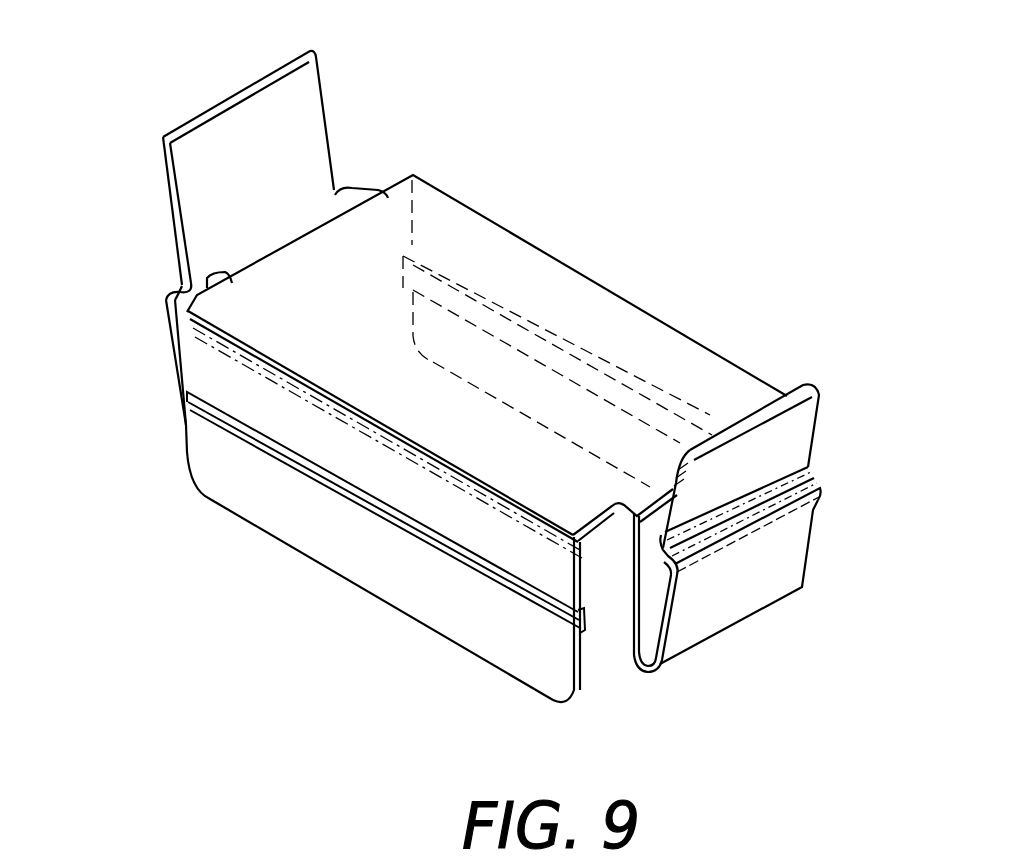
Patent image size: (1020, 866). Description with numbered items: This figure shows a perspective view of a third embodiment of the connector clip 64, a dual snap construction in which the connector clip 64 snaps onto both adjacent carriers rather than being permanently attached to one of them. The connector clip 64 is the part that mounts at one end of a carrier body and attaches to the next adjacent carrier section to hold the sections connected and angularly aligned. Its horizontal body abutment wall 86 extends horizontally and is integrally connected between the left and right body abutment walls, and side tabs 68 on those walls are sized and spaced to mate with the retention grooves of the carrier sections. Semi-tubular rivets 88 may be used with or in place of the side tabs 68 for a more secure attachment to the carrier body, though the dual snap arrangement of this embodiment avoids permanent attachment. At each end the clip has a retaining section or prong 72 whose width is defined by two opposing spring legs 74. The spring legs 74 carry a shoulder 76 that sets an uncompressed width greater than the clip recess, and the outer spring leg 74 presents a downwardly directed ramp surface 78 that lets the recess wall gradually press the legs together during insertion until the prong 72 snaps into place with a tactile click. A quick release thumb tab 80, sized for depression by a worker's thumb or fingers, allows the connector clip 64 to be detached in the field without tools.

The connector clip 64 is at (150, 166).
The side tabs 68 is at (295, 456).
The prong 72 is at (167, 398).
The spring legs 74 is at (650, 609).
The shoulder 76 is at (181, 287).
The ramp surface 78 is at (800, 537).
The thumb tab 80 is at (303, 90).
The horizontal body abutment wall 86 is at (558, 294).
The semi-tubular rivets 88 is at (393, 572).